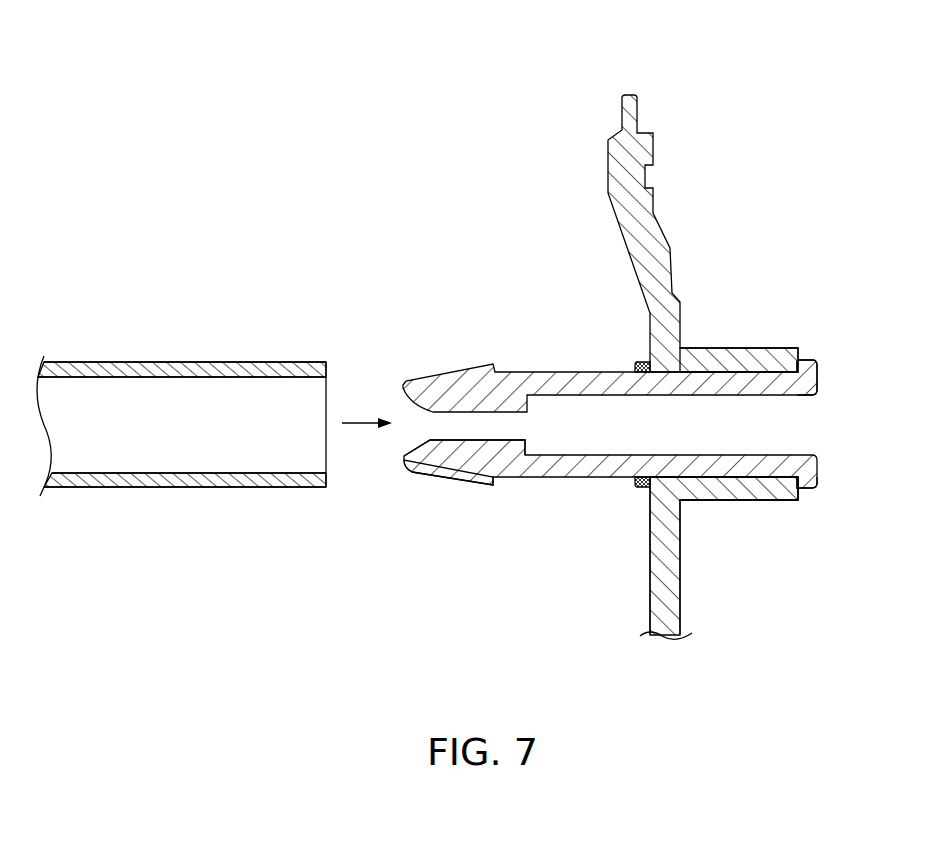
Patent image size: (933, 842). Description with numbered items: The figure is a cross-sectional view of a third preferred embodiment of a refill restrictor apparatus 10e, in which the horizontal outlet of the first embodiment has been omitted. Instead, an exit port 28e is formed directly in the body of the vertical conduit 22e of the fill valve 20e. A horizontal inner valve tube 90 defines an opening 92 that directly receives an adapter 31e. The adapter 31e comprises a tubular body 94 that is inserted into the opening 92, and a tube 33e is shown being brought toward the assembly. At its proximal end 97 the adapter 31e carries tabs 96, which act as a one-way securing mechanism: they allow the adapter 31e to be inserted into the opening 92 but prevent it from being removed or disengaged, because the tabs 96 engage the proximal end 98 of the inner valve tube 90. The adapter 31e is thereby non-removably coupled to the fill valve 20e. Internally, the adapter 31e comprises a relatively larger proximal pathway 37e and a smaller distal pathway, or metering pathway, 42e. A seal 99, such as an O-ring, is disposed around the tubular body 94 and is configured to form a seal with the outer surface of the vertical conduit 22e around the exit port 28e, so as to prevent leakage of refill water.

The refill restrictor apparatus 10e is at (442, 74).
The fill valve 20e is at (784, 136).
The vertical conduit 22e is at (650, 567).
The exit port 28e is at (648, 455).
The adapter 31e is at (507, 300).
The tube 33e is at (173, 361).
The proximal pathway 37e is at (590, 447).
The distal pathway 42e is at (477, 436).
The horizontal inner valve tube 90 is at (710, 348).
The opening 92 is at (757, 455).
The tubular body 94 is at (547, 478).
The tabs 96 is at (817, 471).
The proximal end 97 is at (850, 370).
The proximal end 98 is at (802, 361).
The seal 99 is at (637, 363).